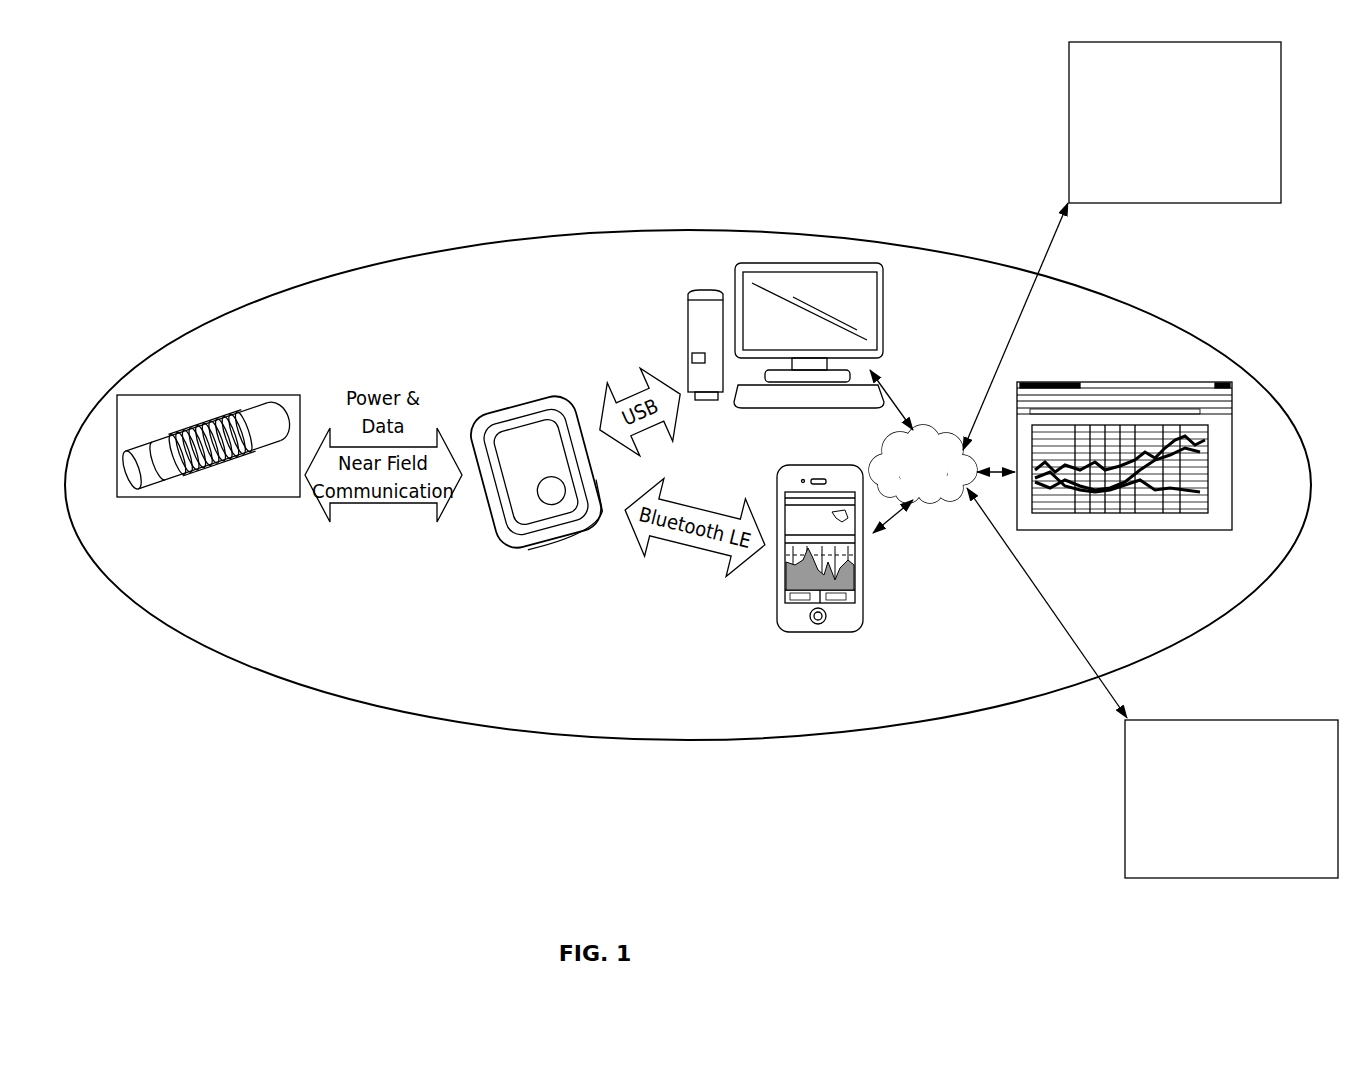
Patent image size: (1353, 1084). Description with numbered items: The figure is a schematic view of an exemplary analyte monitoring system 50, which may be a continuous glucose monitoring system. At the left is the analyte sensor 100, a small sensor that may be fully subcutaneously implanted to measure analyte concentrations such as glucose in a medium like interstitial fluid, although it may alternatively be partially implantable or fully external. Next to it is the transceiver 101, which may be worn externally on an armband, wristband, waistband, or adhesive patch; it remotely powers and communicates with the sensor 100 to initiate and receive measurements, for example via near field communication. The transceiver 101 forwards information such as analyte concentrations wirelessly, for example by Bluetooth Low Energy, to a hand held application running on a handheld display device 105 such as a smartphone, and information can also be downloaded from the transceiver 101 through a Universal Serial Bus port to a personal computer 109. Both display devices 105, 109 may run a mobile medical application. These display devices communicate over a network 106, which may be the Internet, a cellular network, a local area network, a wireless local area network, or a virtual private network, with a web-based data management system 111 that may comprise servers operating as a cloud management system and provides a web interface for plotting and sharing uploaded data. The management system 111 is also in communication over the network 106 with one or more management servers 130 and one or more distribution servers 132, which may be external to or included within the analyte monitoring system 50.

The analyte monitoring system 50 is at (382, 248).
The analyte sensor 100 is at (207, 393).
The transceiver 101 is at (490, 531).
The handheld display device 105 is at (863, 596).
The network 106 is at (931, 496).
The personal computer 109 is at (792, 258).
The web-based data management system 111 is at (1107, 382).
The management server 130 is at (1067, 176).
The distribution server 132 is at (1122, 852).